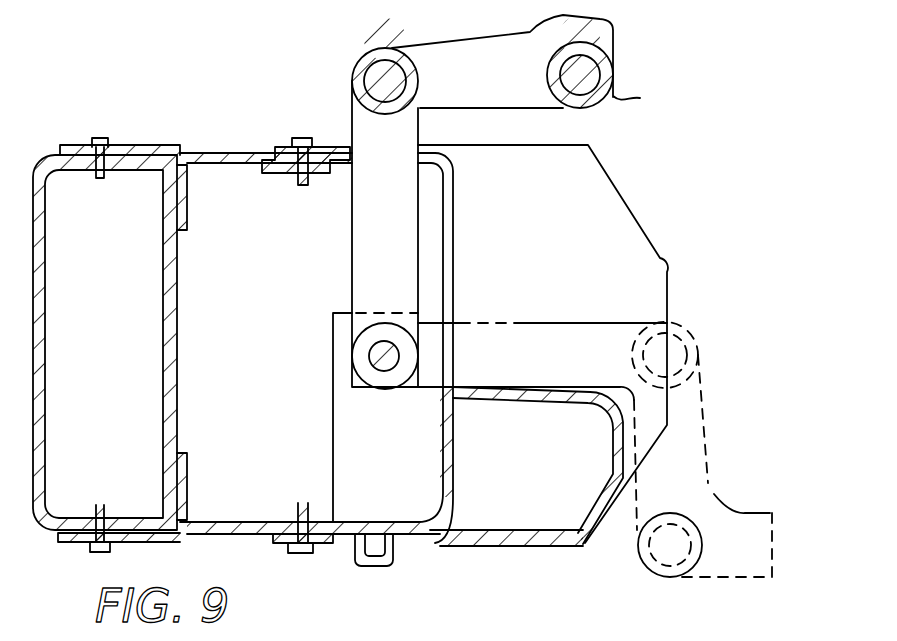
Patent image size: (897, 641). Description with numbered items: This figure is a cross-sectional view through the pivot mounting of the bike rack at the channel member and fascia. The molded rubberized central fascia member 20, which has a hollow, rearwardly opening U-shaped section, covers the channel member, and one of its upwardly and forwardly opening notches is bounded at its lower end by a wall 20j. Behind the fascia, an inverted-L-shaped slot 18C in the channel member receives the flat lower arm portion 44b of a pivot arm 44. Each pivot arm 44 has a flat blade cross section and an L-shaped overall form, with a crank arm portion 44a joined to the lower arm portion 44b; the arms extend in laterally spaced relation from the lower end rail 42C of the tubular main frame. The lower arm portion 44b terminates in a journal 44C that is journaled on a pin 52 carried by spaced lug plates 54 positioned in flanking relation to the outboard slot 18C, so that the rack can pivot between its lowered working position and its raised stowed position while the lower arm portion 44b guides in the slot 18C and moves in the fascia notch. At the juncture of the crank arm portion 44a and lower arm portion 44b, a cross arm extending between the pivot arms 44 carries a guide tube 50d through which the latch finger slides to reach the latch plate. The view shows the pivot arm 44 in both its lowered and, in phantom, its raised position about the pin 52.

The slot 18C is at (452, 227).
The central fascia member 20 is at (592, 344).
The wall 20j is at (505, 402).
The pivot arm 44 is at (527, 296).
The crank arm portion 44a is at (493, 110).
The lower arm portion 44b is at (358, 235).
The journal 44C is at (323, 362).
The guide tube 50d is at (386, 116).
The lower end rail 42C is at (757, 500).
The pin 52 is at (381, 371).
The lug plates 54 is at (342, 456).